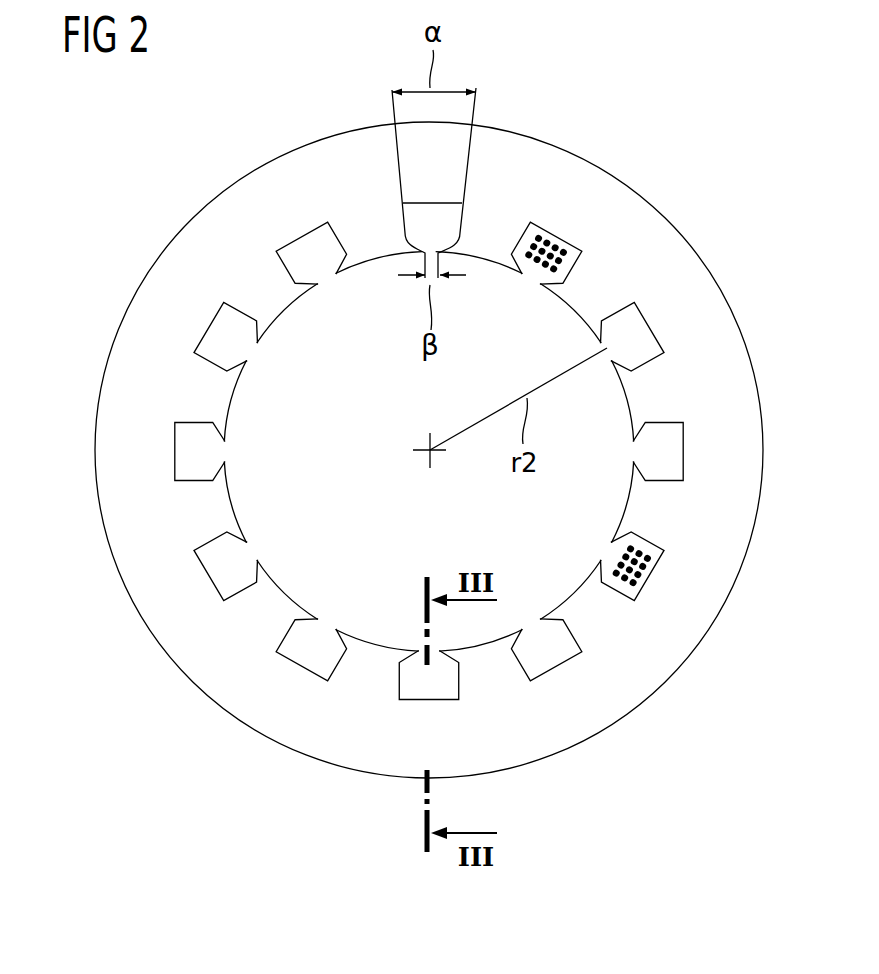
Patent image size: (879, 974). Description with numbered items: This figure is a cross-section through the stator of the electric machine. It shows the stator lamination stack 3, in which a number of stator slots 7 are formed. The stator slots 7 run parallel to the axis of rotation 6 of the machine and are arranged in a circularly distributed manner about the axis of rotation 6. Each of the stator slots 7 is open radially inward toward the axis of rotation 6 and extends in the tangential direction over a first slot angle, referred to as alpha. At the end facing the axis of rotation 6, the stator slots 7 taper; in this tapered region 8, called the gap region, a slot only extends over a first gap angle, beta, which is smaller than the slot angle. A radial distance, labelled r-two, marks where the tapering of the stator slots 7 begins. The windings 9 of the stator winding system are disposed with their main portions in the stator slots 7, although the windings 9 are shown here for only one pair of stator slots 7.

The stator lamination stack 3 is at (568, 167).
The axis of rotation 6 is at (434, 458).
The stator slots 7 is at (338, 233).
The tapered region 8 is at (336, 296).
The windings 9 is at (558, 228).